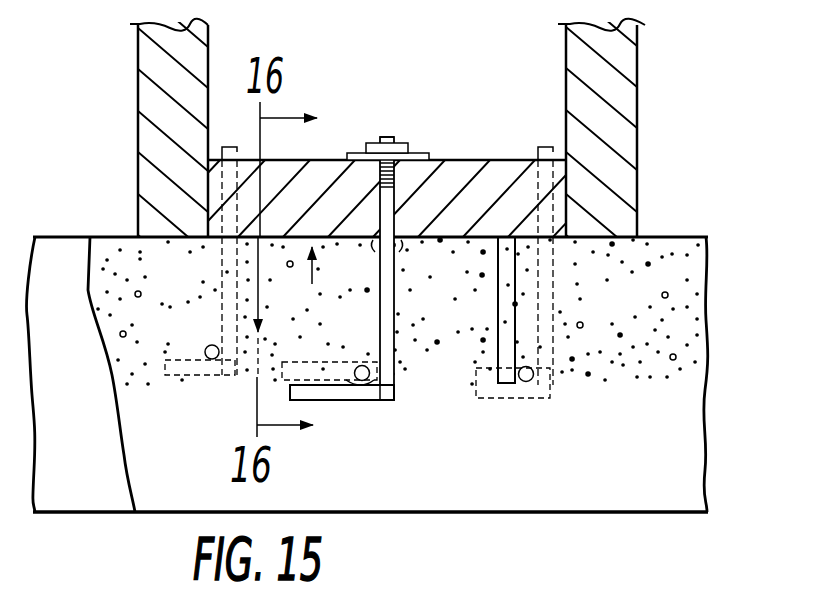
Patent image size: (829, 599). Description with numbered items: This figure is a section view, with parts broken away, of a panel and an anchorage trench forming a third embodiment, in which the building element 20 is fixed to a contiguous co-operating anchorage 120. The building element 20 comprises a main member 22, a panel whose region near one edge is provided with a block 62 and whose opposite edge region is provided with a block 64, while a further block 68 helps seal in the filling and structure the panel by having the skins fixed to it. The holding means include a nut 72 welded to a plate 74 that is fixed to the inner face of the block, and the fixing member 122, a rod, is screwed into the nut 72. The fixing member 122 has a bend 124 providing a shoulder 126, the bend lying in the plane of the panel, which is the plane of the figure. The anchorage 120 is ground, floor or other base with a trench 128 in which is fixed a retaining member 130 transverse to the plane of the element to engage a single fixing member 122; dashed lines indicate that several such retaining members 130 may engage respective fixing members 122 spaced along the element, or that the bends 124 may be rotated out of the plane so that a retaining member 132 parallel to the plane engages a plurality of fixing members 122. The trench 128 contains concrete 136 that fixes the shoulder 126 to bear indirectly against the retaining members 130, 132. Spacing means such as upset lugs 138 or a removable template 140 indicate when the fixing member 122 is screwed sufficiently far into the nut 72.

The building element 20 is at (413, 147).
The main member 22 is at (292, 278).
The block 62 is at (173, 80).
The block 64 is at (608, 96).
The block 68 is at (493, 175).
The nut 72 is at (402, 150).
The plate 74 is at (358, 154).
The anchorage 120 is at (670, 235).
The fixing member 122 is at (220, 282).
The bend 124 is at (380, 398).
The shoulder 126 is at (328, 390).
The trench 128 is at (70, 270).
The retaining member 130 is at (207, 342).
The retaining member 132 is at (314, 362).
The concrete 136 is at (500, 495).
The upset lugs 138 is at (380, 266).
The removable template 140 is at (497, 328).